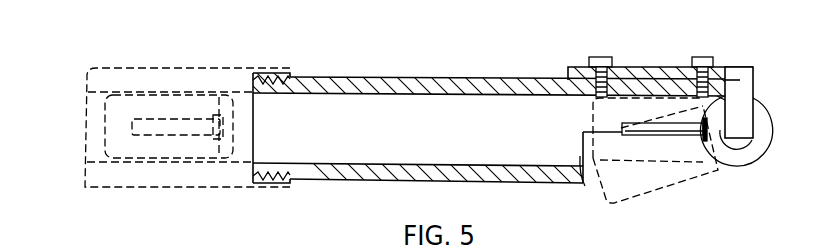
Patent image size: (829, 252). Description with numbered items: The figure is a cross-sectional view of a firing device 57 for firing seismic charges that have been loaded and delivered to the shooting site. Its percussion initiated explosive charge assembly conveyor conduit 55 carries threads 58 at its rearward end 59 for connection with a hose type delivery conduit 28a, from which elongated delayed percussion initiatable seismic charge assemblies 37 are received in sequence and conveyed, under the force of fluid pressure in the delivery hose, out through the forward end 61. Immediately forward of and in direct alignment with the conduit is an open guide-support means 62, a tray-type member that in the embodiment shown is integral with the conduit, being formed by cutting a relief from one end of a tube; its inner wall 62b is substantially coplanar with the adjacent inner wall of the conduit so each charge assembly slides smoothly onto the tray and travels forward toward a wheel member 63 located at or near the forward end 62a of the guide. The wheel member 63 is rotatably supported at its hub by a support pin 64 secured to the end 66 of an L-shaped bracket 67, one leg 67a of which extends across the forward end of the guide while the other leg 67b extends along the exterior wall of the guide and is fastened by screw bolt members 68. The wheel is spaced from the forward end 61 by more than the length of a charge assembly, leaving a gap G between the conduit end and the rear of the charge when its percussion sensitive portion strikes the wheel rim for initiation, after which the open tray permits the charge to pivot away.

The hose type delivery conduit 28a is at (151, 68).
The delayed percussion initiatable seismic charge assembly 37 is at (202, 147).
The percussion initiated explosive charge assembly conveyor conduit 55 is at (389, 77).
The firing device 57 is at (433, 75).
The threads 58 is at (278, 78).
The rearward end 59 is at (255, 83).
The forward end 61 is at (584, 186).
The open guide-support means 62 is at (622, 85).
The forward end of guide member 62a is at (717, 99).
The inner wall of guide member 62b is at (660, 97).
The wheel member 63 is at (768, 143).
The support pin 64 is at (742, 127).
The end of L-shaped bracket 66 is at (757, 130).
The L-shaped bracket 67 is at (725, 66).
The leg of bracket 67a is at (712, 112).
The leg of bracket 67b is at (645, 80).
The screw bolt members 68 is at (600, 57).
The gap G is at (583, 135).